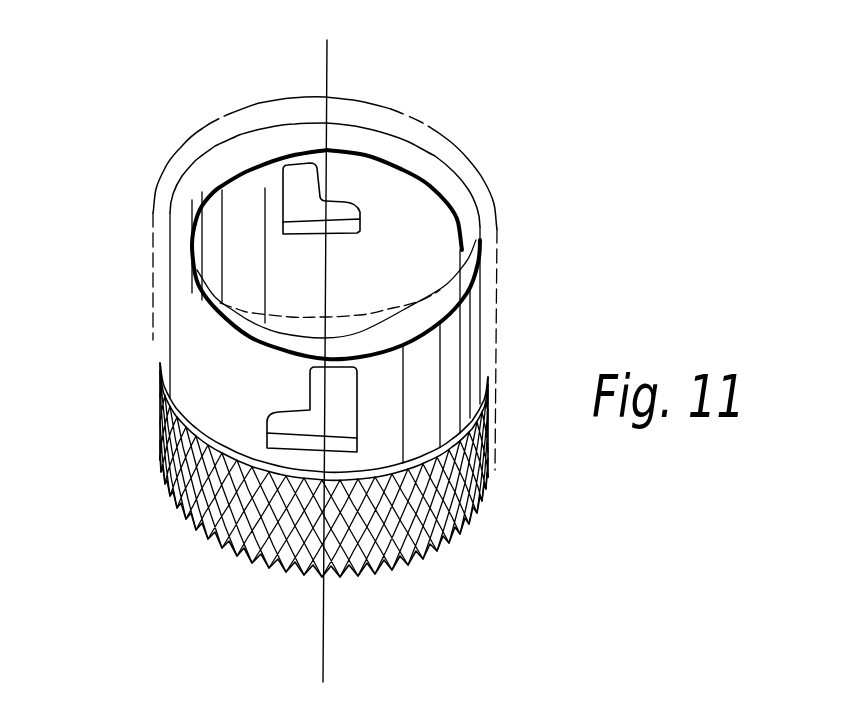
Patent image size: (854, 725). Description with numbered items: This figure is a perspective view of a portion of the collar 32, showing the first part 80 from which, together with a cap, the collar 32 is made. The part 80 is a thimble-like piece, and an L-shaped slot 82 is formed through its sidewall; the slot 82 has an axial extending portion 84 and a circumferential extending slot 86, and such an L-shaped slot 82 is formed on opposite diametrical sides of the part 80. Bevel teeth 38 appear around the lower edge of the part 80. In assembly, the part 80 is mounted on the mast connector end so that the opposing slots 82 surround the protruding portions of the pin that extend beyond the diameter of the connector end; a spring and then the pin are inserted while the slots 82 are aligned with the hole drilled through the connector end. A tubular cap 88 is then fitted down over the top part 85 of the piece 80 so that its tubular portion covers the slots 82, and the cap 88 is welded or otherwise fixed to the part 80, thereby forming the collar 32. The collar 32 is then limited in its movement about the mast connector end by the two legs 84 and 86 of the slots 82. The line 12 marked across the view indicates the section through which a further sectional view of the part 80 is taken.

The section view line 12- 12 is at (327, 40).
The collar 32 is at (275, 506).
The bevel teeth 38 is at (359, 578).
The first part 80 is at (485, 327).
The L-shaped slot 82 is at (317, 309).
The axial extending portion 84 is at (281, 178).
The top part 85 is at (170, 287).
The circumferential extending slot 86 is at (351, 201).
The tubular cap 88 is at (363, 100).